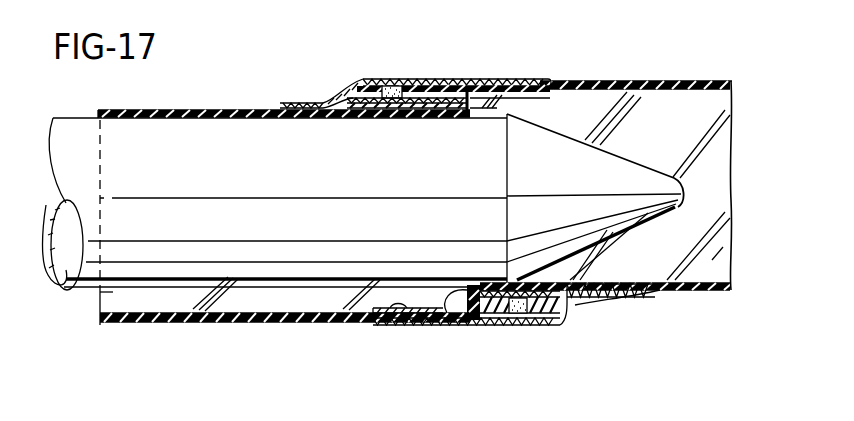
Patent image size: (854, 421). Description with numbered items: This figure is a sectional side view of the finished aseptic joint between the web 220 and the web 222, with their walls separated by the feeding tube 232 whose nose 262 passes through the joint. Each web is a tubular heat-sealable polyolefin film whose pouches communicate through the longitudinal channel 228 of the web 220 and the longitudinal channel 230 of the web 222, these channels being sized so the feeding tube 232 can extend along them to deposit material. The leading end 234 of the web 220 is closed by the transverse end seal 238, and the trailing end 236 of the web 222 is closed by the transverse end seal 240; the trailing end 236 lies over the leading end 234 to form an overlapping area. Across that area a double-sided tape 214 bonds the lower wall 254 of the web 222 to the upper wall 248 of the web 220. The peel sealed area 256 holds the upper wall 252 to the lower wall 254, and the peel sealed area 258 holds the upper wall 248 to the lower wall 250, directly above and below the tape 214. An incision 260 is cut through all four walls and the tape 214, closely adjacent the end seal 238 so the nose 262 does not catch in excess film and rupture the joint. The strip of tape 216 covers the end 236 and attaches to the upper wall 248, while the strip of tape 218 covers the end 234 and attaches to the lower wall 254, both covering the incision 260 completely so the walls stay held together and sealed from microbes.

The double-sided tape 214 is at (432, 110).
The strip of tape 216 is at (440, 78).
The strip of tape 218 is at (333, 330).
The web 220 is at (162, 110).
The web 222 is at (618, 84).
The longitudinal channel 228 is at (143, 298).
The longitudinal channel 230 is at (758, 250).
The feeding tube 232 is at (167, 173).
The leading end of web 234 is at (583, 308).
The trailing end of web 236 is at (317, 104).
The transverse end seal 238 is at (520, 315).
The transverse end seal 240 is at (390, 80).
The upper wall of web 248 is at (357, 112).
The lower wall of web 250 is at (493, 313).
The upper wall of web 252 is at (357, 90).
The lower wall of web 254 is at (422, 78).
The peel sealed area 256 is at (505, 95).
The peel sealed area 258 is at (398, 305).
The incision 260 is at (475, 113).
The nose 262 is at (575, 185).